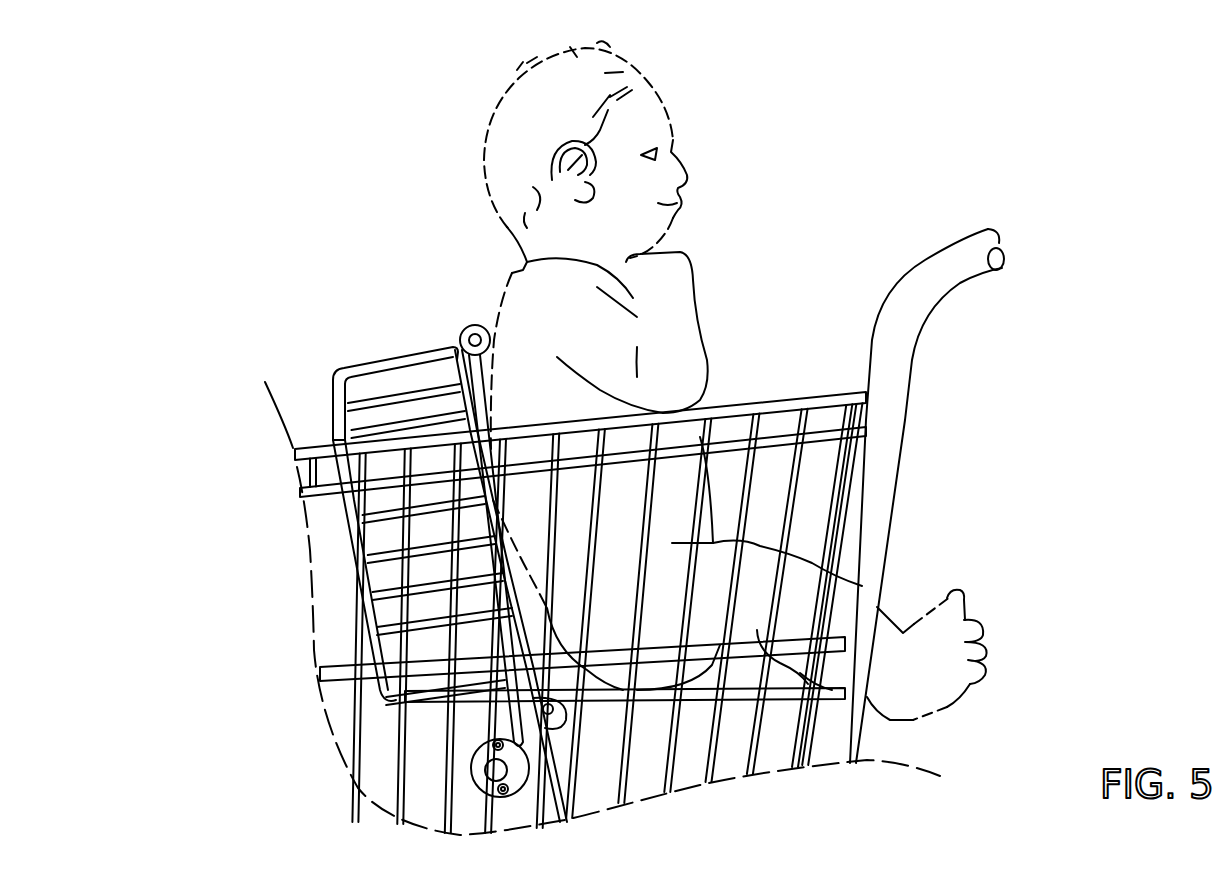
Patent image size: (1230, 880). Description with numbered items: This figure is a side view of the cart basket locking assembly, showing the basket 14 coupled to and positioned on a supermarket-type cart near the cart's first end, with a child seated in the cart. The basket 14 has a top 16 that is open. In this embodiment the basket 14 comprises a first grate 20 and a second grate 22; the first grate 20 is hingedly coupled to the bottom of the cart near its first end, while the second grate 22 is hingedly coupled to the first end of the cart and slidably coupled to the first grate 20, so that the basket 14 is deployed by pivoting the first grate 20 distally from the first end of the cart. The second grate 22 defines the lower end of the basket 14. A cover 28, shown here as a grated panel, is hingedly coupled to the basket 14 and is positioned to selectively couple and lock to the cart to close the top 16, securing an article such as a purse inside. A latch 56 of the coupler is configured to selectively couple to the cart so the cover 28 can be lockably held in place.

The basket 14 is at (609, 540).
The top 16 is at (773, 405).
The first grate 20 is at (472, 491).
The second grate 22 is at (740, 705).
The cover 28 is at (366, 352).
The latch 56 is at (476, 792).